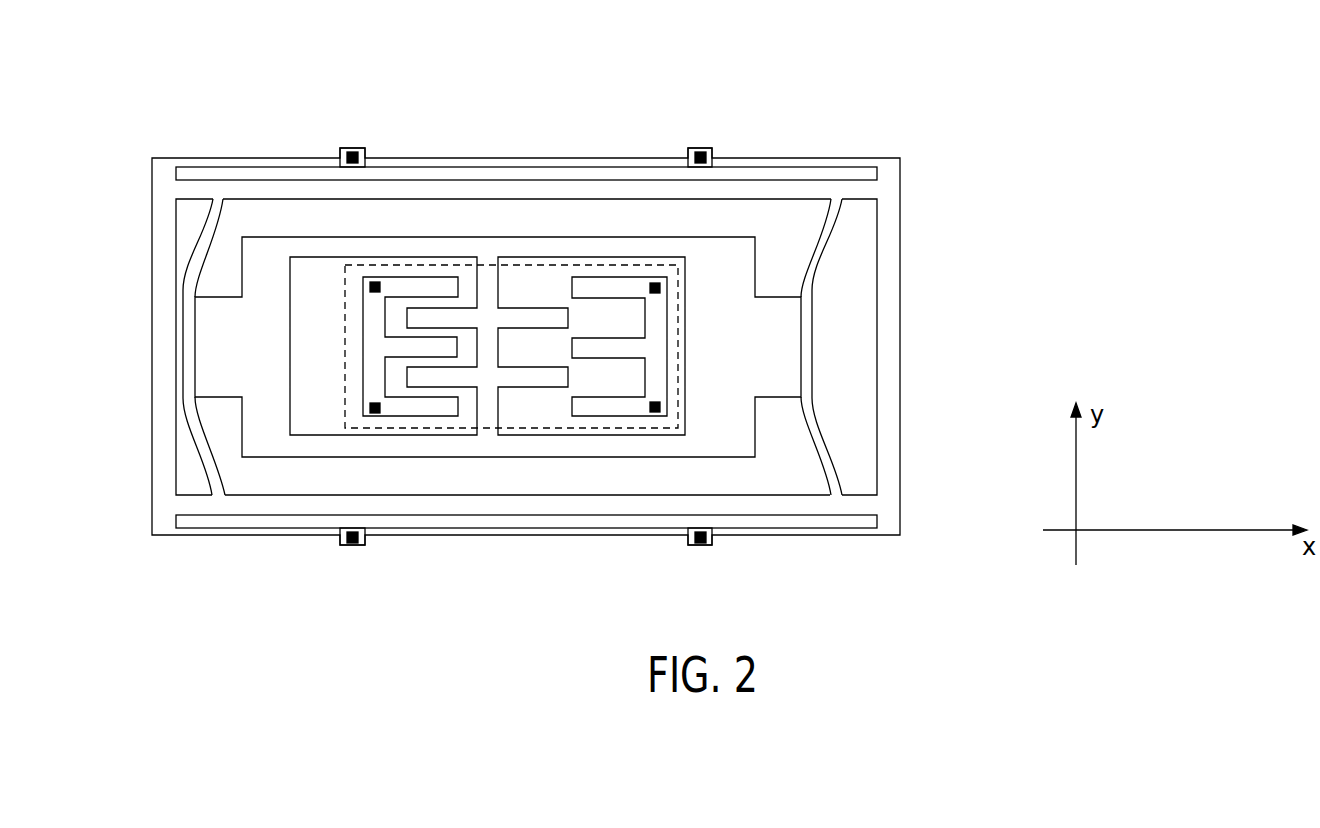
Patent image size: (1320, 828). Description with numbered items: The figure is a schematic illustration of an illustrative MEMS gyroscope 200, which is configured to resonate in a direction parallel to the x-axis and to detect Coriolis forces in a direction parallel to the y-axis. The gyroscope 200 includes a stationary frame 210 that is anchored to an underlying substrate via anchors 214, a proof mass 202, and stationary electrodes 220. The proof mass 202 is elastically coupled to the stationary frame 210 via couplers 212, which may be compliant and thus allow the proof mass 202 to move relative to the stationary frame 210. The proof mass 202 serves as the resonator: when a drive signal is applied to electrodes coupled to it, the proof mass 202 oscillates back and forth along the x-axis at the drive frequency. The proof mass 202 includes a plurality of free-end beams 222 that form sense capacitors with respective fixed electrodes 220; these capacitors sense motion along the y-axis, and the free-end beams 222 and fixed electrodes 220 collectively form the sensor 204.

The gyroscope 200 is at (1062, 112).
The proof mass 202 is at (272, 298).
The sensor 204 is at (560, 262).
The stationary frame 210 is at (888, 202).
The couplers 212 is at (195, 432).
The anchors 214 is at (703, 146).
The stationary electrodes 220 is at (615, 287).
The free-end beams 222 is at (533, 378).